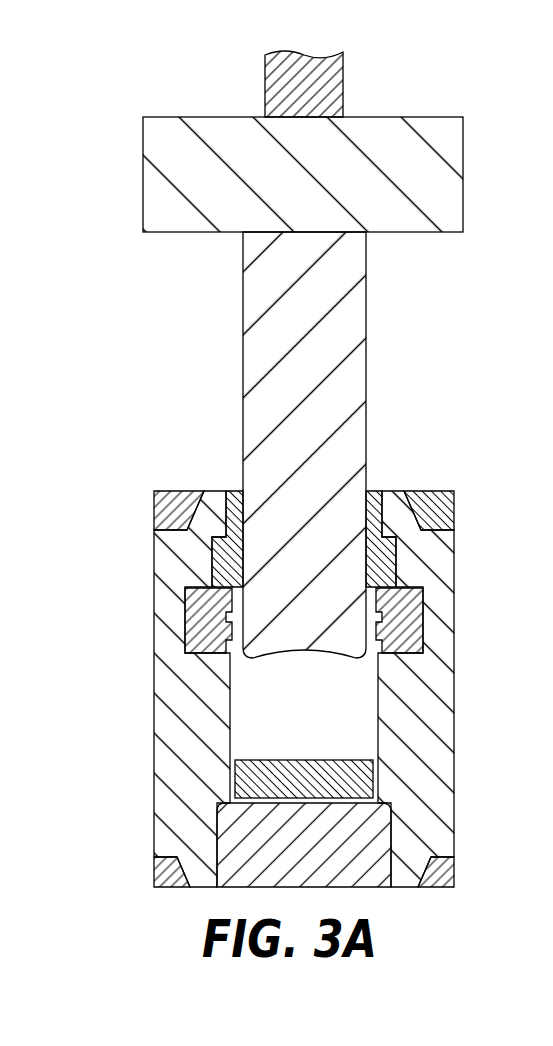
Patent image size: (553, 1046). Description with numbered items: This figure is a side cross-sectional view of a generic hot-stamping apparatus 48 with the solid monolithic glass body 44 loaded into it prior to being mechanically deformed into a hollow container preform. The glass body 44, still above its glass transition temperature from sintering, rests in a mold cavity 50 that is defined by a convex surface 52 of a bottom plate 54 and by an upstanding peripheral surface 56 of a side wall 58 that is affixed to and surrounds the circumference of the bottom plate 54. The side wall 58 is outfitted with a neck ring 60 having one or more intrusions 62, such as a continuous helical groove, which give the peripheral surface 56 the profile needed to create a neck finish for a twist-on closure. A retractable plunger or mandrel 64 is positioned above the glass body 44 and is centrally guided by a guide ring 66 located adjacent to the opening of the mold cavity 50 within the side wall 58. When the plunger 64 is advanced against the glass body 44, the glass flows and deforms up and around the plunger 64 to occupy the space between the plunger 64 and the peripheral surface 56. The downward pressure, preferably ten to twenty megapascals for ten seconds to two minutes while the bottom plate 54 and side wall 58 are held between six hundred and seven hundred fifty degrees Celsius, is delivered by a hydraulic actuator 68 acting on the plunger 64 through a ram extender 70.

The solid monolithic glass body 44 is at (291, 774).
The hot-stamping apparatus 48 is at (160, 453).
The mold cavity 50 is at (450, 696).
The convex surface 52 is at (347, 807).
The bottom plate 54 is at (377, 866).
The upstanding peripheral surface 56 is at (160, 697).
The side wall 58 is at (175, 722).
The neck ring 60 is at (378, 645).
The intrusions 62 is at (380, 654).
The retractable plunger 64 is at (338, 310).
The guide ring 66 is at (392, 560).
The hydraulic actuator 68 is at (325, 74).
The ram extender 70 is at (417, 187).